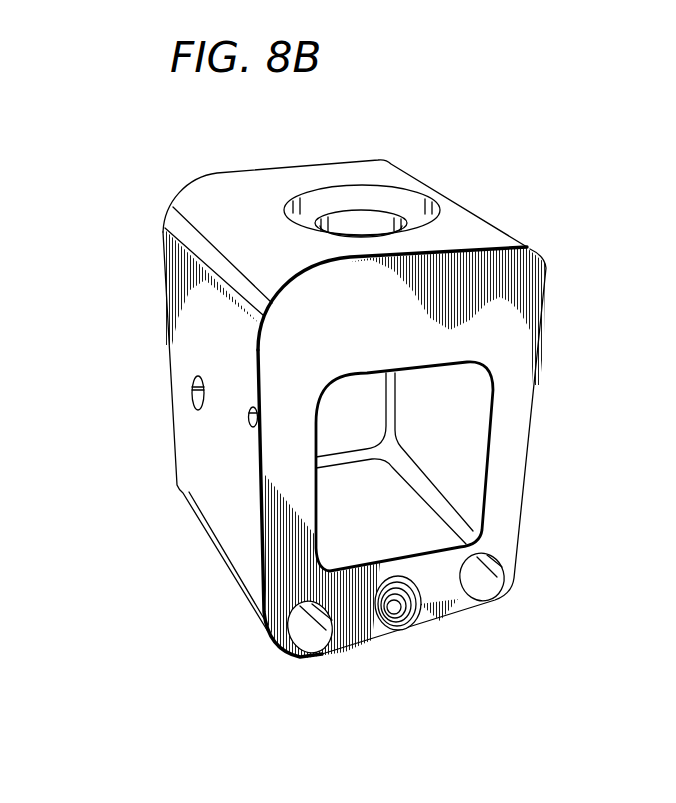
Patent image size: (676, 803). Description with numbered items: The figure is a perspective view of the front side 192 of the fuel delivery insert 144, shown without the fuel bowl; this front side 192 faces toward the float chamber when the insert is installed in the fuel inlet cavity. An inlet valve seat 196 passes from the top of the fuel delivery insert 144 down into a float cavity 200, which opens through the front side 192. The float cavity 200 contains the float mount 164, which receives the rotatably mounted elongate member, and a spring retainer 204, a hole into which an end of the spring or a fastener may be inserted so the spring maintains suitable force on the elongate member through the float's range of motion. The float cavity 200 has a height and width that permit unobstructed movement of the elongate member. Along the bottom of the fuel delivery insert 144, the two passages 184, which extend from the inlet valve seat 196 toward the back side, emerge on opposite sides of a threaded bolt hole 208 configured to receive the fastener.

The fuel delivery insert 144 is at (484, 162).
The front side 192 is at (503, 270).
The inlet valve seat 196 is at (361, 198).
The float cavity 200 is at (458, 448).
The passages 184 is at (311, 640).
The threaded bolt hole 208 is at (404, 615).
The float mount 164 is at (193, 398).
The spring retainer 204 is at (254, 420).